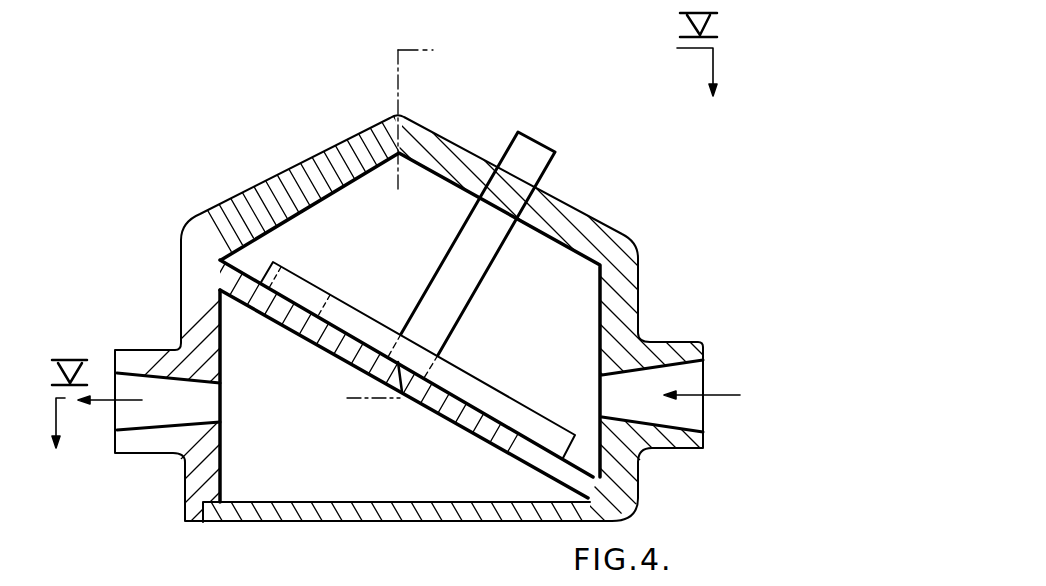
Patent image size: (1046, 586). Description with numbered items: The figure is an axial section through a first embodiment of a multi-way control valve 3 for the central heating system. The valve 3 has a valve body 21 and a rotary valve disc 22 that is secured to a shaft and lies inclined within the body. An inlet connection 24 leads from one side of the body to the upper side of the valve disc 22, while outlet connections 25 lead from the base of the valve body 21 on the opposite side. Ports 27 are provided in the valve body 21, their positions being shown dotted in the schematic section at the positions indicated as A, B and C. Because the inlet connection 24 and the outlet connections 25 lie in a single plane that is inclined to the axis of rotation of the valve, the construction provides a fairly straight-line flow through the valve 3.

The valve 3 is at (297, 155).
The valve body 21 is at (207, 318).
The rotary valve disc 22 is at (352, 310).
The inlet connection 24 is at (690, 378).
The outlet connections 25 is at (138, 415).
The ports 27 is at (298, 318).